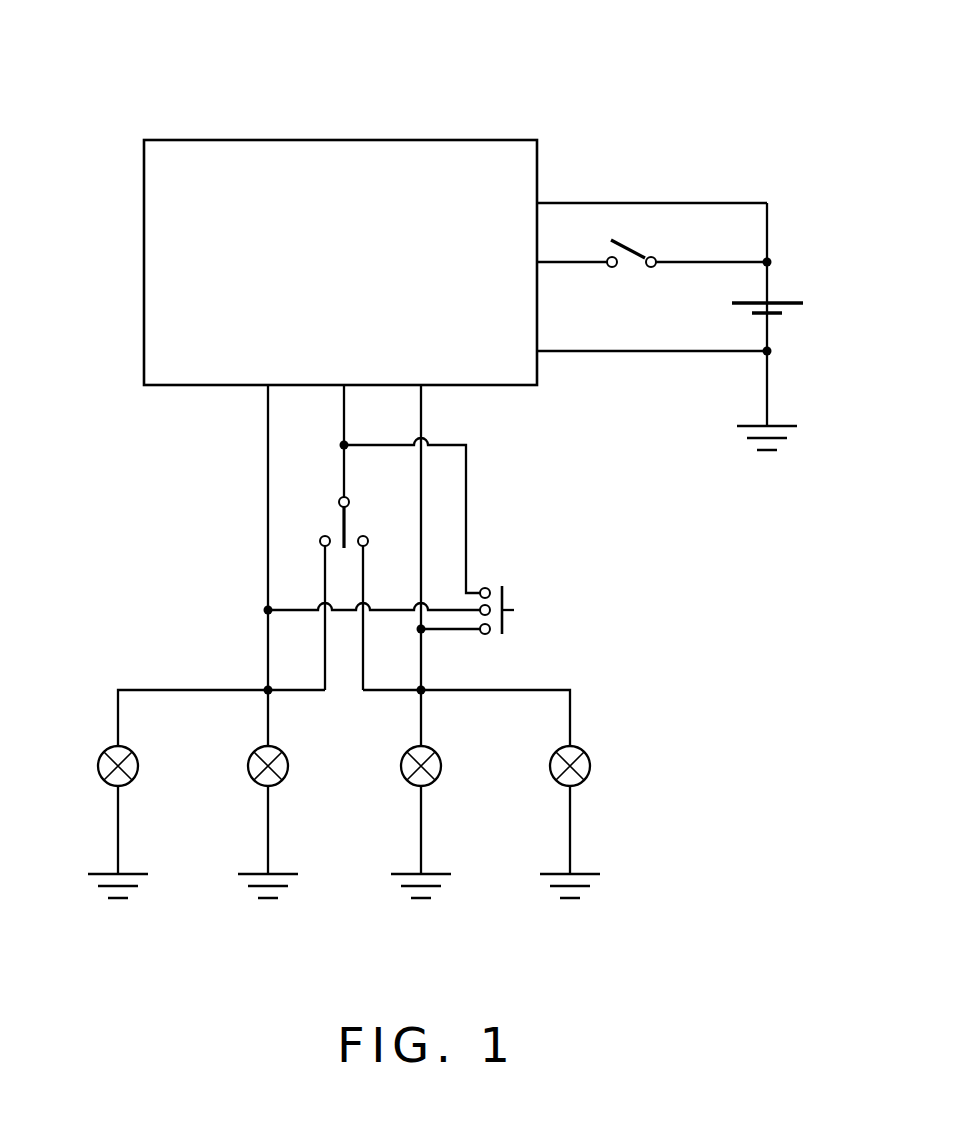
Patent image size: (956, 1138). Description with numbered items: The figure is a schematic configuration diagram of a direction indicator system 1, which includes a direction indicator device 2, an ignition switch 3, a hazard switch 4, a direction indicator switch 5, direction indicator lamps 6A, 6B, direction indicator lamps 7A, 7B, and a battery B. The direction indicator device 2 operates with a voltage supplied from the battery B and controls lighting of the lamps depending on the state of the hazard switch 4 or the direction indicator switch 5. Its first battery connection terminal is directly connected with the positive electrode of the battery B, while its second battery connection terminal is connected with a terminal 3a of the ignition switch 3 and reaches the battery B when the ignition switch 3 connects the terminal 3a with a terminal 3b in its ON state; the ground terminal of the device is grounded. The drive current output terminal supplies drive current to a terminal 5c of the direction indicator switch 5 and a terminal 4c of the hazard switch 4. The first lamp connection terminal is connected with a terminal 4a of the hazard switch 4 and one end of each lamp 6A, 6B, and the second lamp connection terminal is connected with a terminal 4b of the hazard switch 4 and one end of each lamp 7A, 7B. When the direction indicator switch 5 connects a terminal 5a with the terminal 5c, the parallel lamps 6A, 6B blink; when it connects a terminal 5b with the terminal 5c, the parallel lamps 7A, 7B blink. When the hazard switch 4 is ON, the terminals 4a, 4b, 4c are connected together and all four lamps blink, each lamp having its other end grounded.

The direction indicator system 1 is at (716, 60).
The direction indicator device 2 is at (144, 262).
The ignition switch 3 is at (623, 269).
The terminal 3a is at (606, 256).
The terminal 3b is at (633, 277).
The battery B is at (777, 311).
The hazard switch 4 is at (507, 609).
The terminal 4a is at (480, 607).
The terminal 4b is at (485, 634).
The terminal 4c is at (485, 588).
The direction indicator switch 5 is at (346, 502).
The terminal 5a is at (320, 538).
The terminal 5b is at (357, 519).
The terminal 5c is at (339, 498).
The direction indicator lamp 6A is at (137, 760).
The direction indicator lamp 6B is at (250, 773).
The direction indicator lamp 7A is at (553, 773).
The direction indicator lamp 7B is at (440, 760).